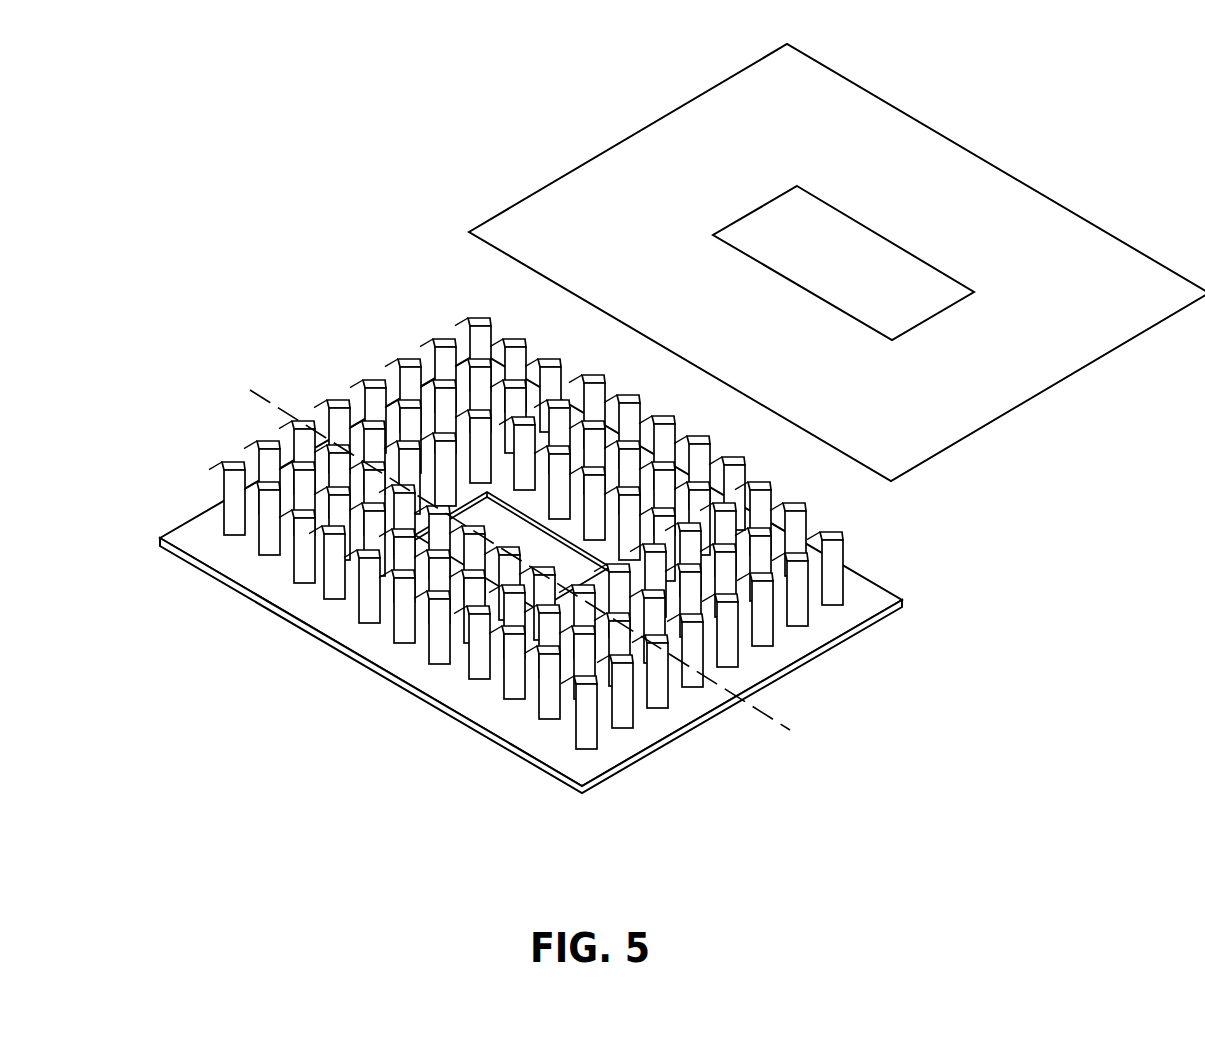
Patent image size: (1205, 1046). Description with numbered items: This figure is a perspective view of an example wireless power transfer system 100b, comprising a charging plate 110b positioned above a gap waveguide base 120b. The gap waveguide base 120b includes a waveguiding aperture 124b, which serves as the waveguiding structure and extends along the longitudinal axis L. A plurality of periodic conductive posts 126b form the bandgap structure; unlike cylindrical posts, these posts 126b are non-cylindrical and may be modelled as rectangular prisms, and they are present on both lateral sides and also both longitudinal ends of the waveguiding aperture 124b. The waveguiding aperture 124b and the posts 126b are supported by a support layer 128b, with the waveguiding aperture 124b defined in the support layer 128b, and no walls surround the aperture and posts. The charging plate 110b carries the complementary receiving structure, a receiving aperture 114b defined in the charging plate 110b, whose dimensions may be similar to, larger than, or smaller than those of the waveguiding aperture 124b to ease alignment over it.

The WPT system 100b is at (340, 91).
The charging plate 110b is at (1025, 367).
The receiving aperture 114b is at (898, 270).
The gap waveguide base 120b is at (262, 611).
The waveguiding aperture 124b is at (482, 513).
The periodic conductive posts 126b is at (772, 599).
The support layer 128b is at (512, 752).
The longitudinal axis L is at (266, 402).